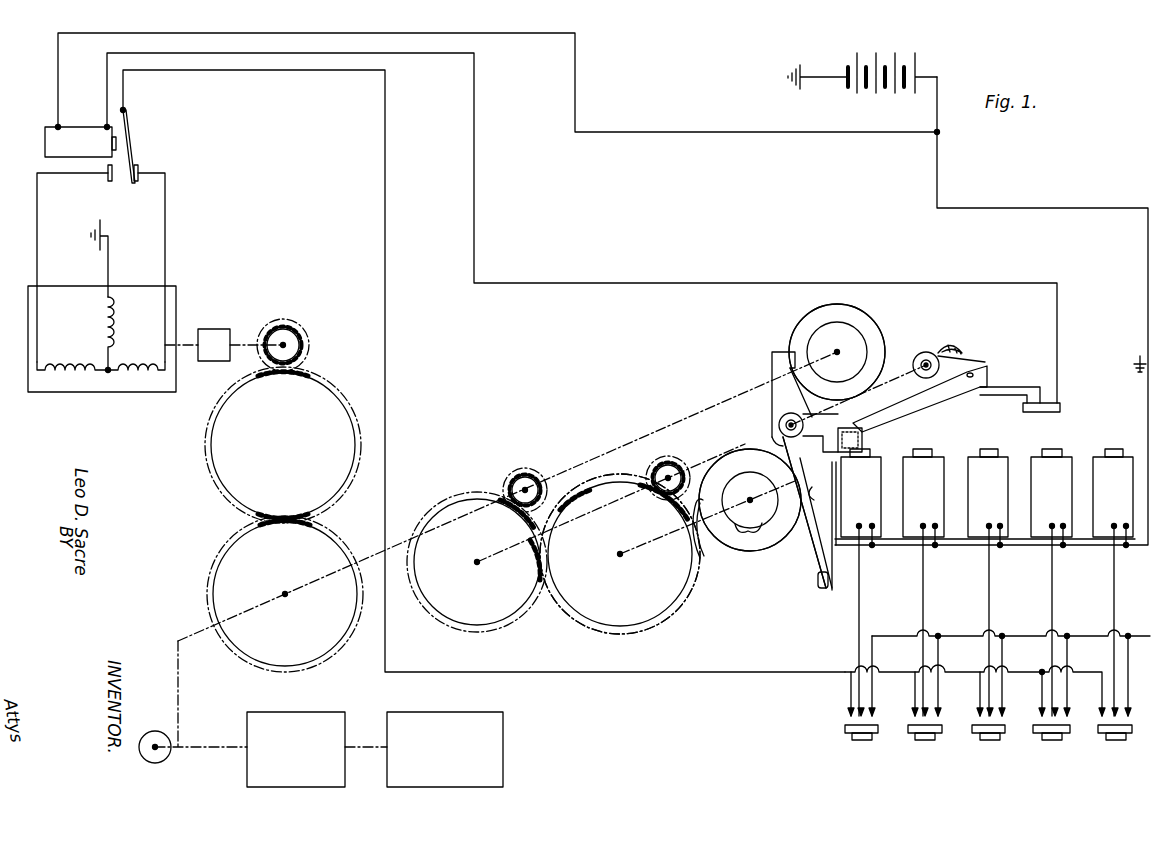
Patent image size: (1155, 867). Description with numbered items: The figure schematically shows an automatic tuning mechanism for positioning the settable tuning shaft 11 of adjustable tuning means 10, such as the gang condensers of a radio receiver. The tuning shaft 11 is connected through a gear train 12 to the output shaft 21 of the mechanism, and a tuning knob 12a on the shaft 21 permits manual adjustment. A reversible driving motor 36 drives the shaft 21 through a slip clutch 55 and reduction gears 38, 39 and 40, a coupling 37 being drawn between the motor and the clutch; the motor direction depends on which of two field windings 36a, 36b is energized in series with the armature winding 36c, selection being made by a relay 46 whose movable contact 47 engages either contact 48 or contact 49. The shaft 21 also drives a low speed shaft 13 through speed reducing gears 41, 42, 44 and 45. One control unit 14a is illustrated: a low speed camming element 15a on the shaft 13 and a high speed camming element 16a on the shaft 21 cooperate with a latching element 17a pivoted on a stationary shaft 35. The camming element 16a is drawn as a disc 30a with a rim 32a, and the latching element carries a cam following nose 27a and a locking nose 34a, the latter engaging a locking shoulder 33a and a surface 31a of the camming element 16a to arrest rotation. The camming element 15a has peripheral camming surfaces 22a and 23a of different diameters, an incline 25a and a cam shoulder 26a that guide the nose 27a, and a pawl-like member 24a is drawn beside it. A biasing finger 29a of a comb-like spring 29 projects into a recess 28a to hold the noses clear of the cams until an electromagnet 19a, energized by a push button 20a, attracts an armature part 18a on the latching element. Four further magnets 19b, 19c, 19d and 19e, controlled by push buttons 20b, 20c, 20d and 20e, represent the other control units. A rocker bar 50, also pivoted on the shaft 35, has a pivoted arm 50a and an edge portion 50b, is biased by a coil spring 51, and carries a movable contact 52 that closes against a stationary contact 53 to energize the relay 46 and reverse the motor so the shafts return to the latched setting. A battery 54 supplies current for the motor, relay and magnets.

The adjustable tuning means 10 is at (505, 740).
The tuning shaft 11 is at (362, 742).
The gear train 12 is at (312, 712).
The tuning knob 12a is at (157, 763).
The shaft 13 is at (662, 543).
The control unit 14a is at (726, 404).
The camming element 15a is at (764, 540).
The camming element 16a is at (868, 328).
The latching element 17a is at (770, 388).
The armature part 18a is at (850, 428).
The electromagnet 19a is at (880, 467).
The magnet 19b is at (940, 465).
The magnet 19c is at (1008, 464).
The magnet 19d is at (1065, 460).
The magnet 19e is at (1132, 460).
The push button 20a is at (836, 734).
The push button 20b is at (921, 753).
The push button 20c is at (1000, 752).
The push button 20d is at (1066, 751).
The push button 20e is at (1127, 751).
The output shaft 21 is at (638, 438).
The peripheral camming surface 22a is at (748, 552).
The peripheral camming surface 23a is at (712, 450).
The pawl 24a is at (706, 540).
The incline 25a is at (798, 485).
The cam shoulder 26a is at (795, 522).
The cam following nose 27a is at (755, 514).
The recess 28a is at (815, 492).
The comb-like biasing spring 29 is at (824, 585).
The biasing finger 29a is at (826, 517).
The drum 30a is at (851, 294).
The surface 31a is at (932, 356).
The drum rim 32a is at (888, 345).
The locking shoulder 33a is at (794, 354).
The locking nose 34a is at (777, 360).
The stationary shaft 35 is at (882, 384).
The reversible driving motor 36 is at (145, 392).
The field winding 36a is at (65, 365).
The field winding 36b is at (136, 348).
The motor armature winding 36c is at (116, 308).
The motor shaft 37 is at (188, 350).
The reduction gear 38 is at (305, 328).
The reduction gear 39 is at (332, 395).
The reduction gear 40 is at (332, 548).
The speed reducing gear 41 is at (521, 470).
The speed reducing gear 42 is at (462, 505).
The speed reducing gear 44 is at (670, 462).
The speed reducing gear 45 is at (648, 620).
The relay 46 is at (48, 127).
The relay contact 47 is at (132, 137).
The relay contact 48 is at (140, 166).
The relay contact 49 is at (107, 182).
The rocker bar 50 is at (958, 386).
The bell crank 50a is at (802, 453).
The lever edge 50b is at (958, 371).
The coil spring 51 is at (958, 348).
The movable contact 52 is at (1048, 400).
The stationary contact 53 is at (990, 397).
The battery 54 is at (902, 52).
The slip clutch 55 is at (222, 327).